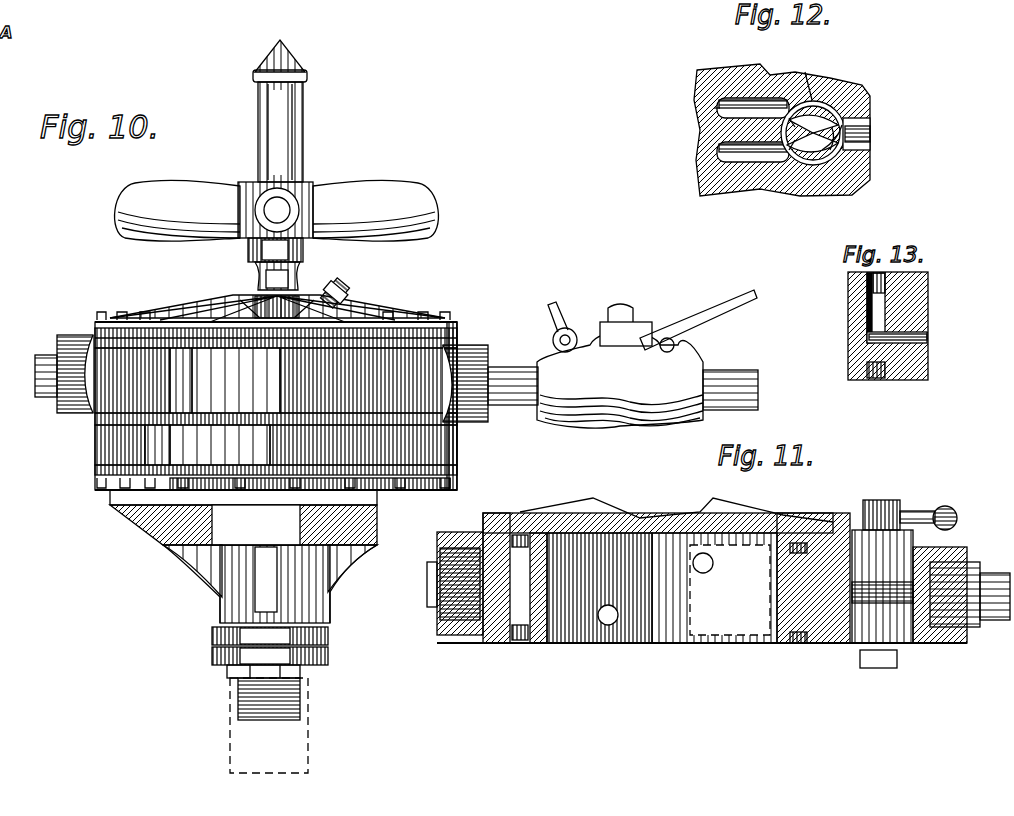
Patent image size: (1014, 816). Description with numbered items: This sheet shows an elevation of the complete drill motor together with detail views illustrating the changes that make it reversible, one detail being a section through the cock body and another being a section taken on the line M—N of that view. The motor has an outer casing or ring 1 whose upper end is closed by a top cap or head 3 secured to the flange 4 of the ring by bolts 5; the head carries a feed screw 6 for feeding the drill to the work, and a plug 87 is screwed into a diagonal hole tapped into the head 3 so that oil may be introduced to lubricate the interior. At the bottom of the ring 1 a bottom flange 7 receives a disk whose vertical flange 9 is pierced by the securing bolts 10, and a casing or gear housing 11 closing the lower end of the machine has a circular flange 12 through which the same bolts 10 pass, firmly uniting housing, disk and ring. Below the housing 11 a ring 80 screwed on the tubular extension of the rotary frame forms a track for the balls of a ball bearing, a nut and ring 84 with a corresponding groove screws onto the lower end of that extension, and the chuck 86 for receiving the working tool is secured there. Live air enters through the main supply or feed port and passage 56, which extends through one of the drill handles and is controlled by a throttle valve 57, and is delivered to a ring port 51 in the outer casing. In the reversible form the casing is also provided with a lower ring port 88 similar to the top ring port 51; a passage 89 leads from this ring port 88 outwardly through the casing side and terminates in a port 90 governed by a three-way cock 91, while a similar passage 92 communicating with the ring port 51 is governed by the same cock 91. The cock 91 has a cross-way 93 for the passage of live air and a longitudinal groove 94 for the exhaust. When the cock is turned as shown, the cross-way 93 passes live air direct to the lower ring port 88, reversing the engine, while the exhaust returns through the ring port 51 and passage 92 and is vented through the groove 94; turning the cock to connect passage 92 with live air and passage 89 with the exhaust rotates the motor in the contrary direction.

In FIG. 10, the outer casing or ring 1 is at (276, 406).
In FIG. 10, the top cap or head 3 is at (447, 322).
In FIG. 11, the top cap or head 3 is at (548, 520).
In FIG. 10, the flange 4 is at (458, 348).
In FIG. 10, the bolts 5 is at (116, 318).
In FIG. 10, the feed screw 6 is at (252, 258).
In FIG. 10, the bottom flange 7 is at (90, 412).
In FIG. 10, the vertical flange 9 is at (276, 450).
In FIG. 10, the securing bolts 10 is at (100, 488).
In FIG. 10, the casing or gear housing 11 is at (243, 556).
In FIG. 11, the casing or gear housing 11 is at (662, 588).
In FIG. 10, the circular flange 12 is at (458, 478).
In FIG. 13, the ring port 51 is at (848, 283).
In FIG. 11, the ring port 51 is at (793, 530).
In FIG. 10, the main supply or feed port and passage 56 is at (758, 395).
In FIG. 12, the main supply or feed port and passage 56 is at (872, 133).
In FIG. 11, the main supply or feed port and passage 56 is at (935, 608).
In FIG. 10, the throttle valve 57 is at (636, 420).
In FIG. 10, the ring 80 is at (212, 636).
In FIG. 10, the nut and ring 84 is at (212, 656).
In FIG. 10, the chuck 86 is at (230, 740).
In FIG. 10, the plug 87 is at (345, 290).
In FIG. 13, the ring port 88 is at (868, 380).
In FIG. 11, the ring port 88 is at (520, 645).
In FIG. 12, the passage 89 is at (735, 190).
In FIG. 11, the passage 89 is at (773, 648).
In FIG. 12, the port 90 is at (790, 168).
In FIG. 12, the three-way cock 91 is at (815, 168).
In FIG. 12, the passage 92 is at (740, 100).
In FIG. 13, the passage 92 is at (866, 318).
In FIG. 12, the cross-way 93 is at (840, 150).
In FIG. 11, the cross-way 93 is at (950, 548).
In FIG. 12, the longitudinal groove 94 is at (838, 165).
In FIG. 11, the longitudinal groove 94 is at (848, 648).
In FIG. 12, the section line M—N M is at (714, 108).
In FIG. 12, the section line M— N is at (808, 72).